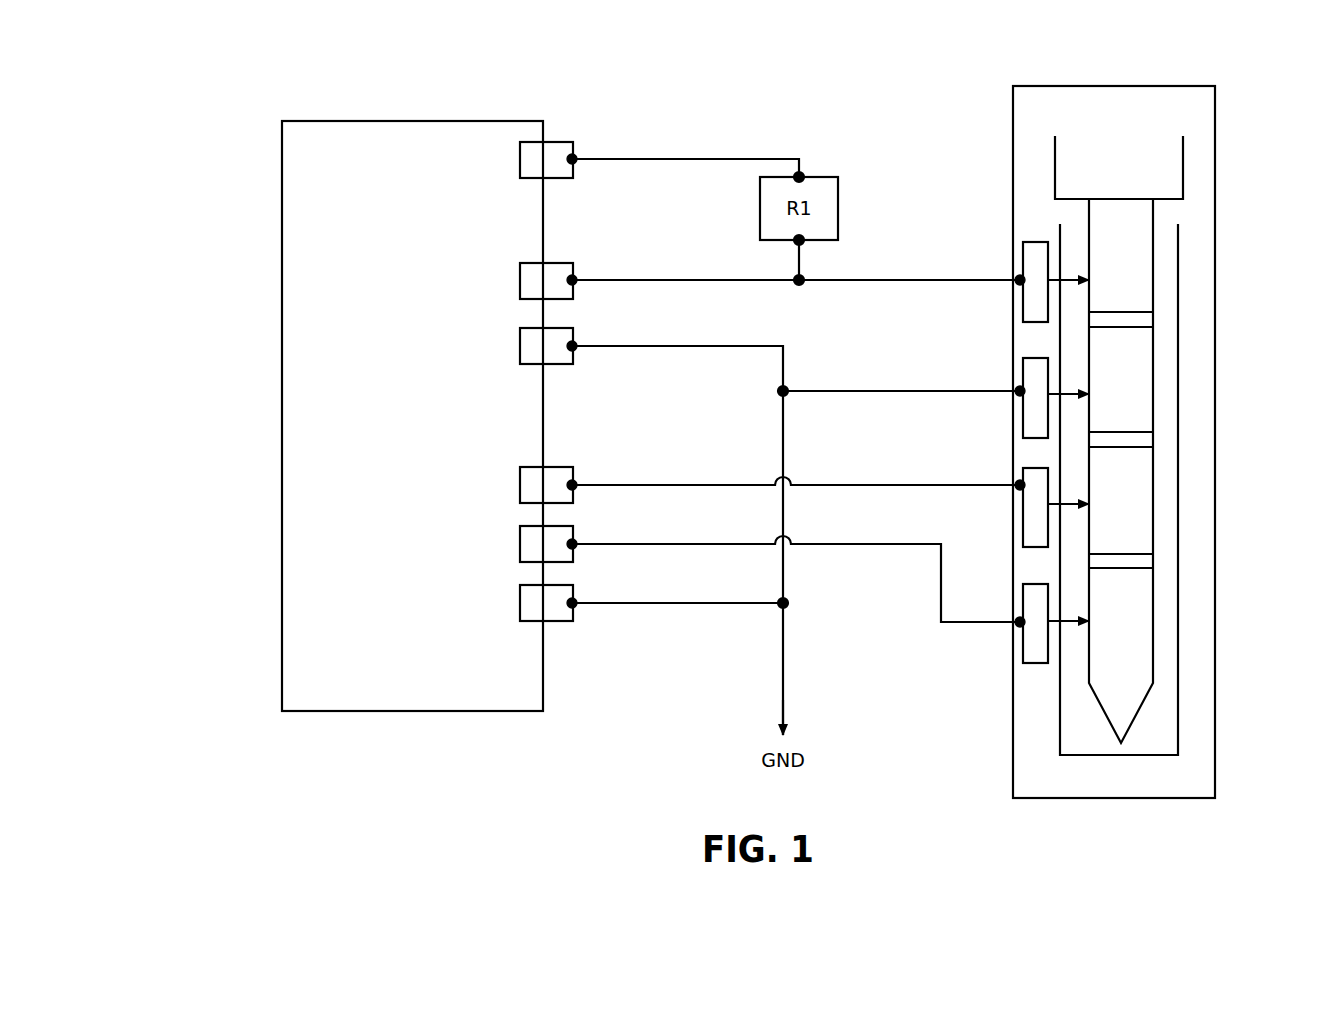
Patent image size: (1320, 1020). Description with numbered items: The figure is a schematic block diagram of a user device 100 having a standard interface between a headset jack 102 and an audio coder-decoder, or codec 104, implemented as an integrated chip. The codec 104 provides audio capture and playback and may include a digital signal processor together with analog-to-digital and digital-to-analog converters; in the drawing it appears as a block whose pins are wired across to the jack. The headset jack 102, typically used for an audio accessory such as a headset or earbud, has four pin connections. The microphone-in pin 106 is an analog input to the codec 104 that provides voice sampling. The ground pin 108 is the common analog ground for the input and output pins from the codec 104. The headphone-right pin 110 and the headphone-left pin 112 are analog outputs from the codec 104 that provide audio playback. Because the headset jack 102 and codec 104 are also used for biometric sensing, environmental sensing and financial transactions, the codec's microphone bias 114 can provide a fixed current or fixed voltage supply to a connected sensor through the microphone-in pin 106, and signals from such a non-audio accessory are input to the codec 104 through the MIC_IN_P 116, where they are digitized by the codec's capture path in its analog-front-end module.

The user device 100 is at (188, 76).
The headset jack 102 is at (1180, 252).
The audio coder-decoder (codec) 104 is at (330, 121).
The microphone-in (MIC) pin 106 is at (1022, 250).
The ground (GND) pin 108 is at (1022, 364).
The headphone-right (HPHR) pin 110 is at (1022, 526).
The headphone-left (HPHL) pin 112 is at (1022, 656).
The microphone bias 114 is at (573, 142).
The MIC_IN_P 116 is at (573, 263).